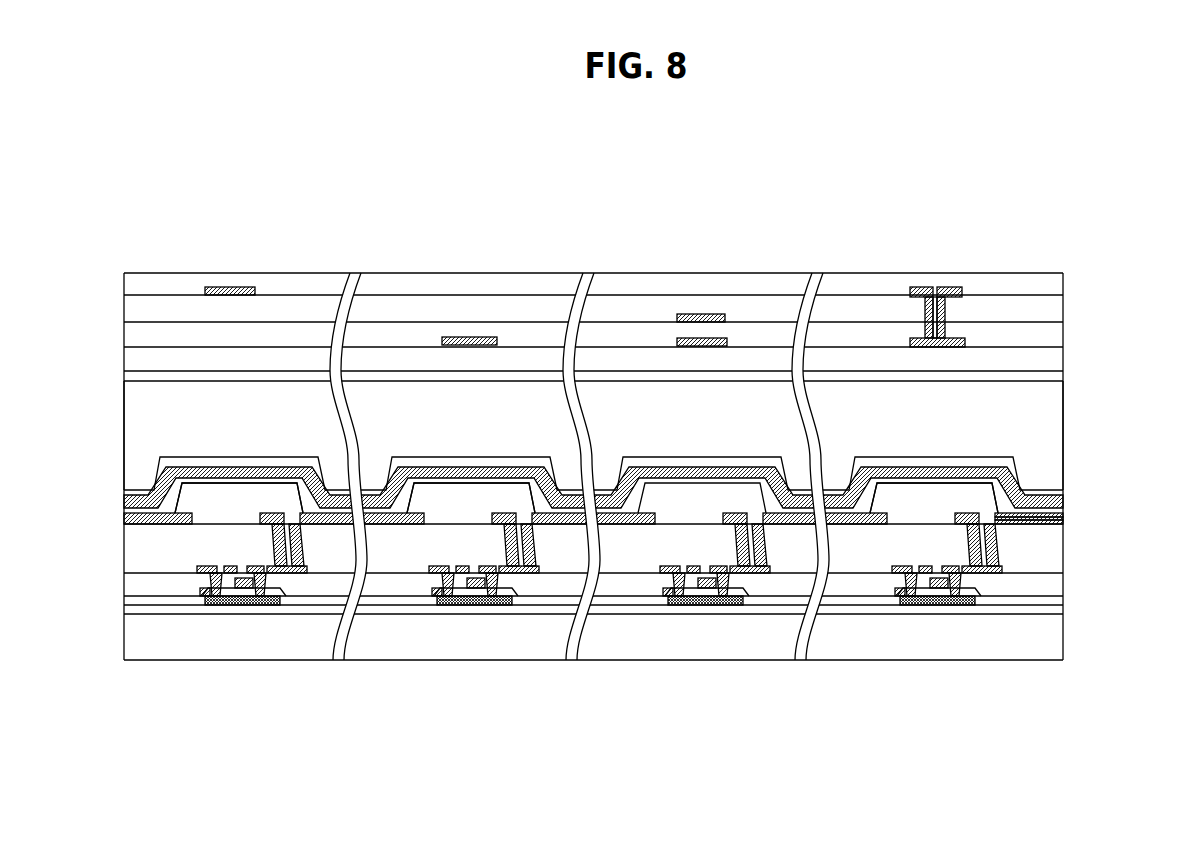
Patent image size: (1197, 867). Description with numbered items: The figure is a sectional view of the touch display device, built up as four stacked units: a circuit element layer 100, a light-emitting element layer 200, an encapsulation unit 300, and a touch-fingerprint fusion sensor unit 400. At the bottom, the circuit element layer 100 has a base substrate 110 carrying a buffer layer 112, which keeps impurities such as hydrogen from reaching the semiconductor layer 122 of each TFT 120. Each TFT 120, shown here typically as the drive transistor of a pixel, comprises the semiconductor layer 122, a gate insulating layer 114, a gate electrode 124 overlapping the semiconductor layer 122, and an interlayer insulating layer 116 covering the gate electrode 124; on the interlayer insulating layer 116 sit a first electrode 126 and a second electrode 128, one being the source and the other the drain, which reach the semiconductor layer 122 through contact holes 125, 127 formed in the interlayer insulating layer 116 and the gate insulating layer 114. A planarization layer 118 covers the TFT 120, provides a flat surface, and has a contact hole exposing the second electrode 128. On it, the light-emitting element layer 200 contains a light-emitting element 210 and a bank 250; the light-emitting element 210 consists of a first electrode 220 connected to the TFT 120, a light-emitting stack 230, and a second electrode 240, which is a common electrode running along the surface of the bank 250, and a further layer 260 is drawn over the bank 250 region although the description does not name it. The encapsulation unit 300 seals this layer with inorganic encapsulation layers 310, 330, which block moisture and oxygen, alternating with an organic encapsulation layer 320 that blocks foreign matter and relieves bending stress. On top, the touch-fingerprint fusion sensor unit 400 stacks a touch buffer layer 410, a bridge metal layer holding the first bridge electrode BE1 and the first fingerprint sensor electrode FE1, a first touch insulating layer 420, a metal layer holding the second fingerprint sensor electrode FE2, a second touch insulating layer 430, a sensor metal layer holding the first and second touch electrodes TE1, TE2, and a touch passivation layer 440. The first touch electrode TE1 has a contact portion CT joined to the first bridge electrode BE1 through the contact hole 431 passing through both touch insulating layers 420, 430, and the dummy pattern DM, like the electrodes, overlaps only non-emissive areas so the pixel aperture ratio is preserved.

The circuit element layer 100 is at (651, 622).
The base substrate 110 is at (1065, 640).
The buffer layer 112 is at (1065, 611).
The gate insulating layer 114 is at (1065, 601).
The interlayer insulating layer 116 is at (1065, 587).
The planarization layer 118 is at (621, 548).
The TFT 120 is at (666, 665).
The semiconductor layer 122 is at (690, 601).
The gate electrode 124 is at (712, 589).
The contact hole 125 is at (667, 587).
The first electrode 126 is at (672, 594).
The contact hole 127 is at (764, 643).
The second electrode 128 is at (730, 591).
The light-emitting element layer 200 is at (596, 646).
The light-emitting element 210 is at (596, 645).
The first electrode 220 is at (1018, 524).
The light-emitting stack 230 is at (1035, 520).
The second electrode 240 is at (1052, 516).
The bank 250 is at (923, 481).
The common electrode 260 is at (914, 470).
The encapsulation unit 300 is at (651, 433).
The inorganic encapsulation layer 310 is at (1065, 486).
The organic encapsulation layer 320 is at (1065, 430).
The inorganic encapsulation layer 330 is at (621, 393).
The touch-fingerprint fusion sensor unit 400 is at (587, 283).
The touch buffer layer 410 is at (1065, 359).
The first touch insulating layer 420 is at (1065, 334).
The second touch insulating layer 430 is at (1065, 308).
The touch passivation layer 440 is at (1065, 285).
The contact hole 431 is at (929, 296).
The first touch electrode TE1 is at (950, 288).
The second touch electrode TE2 is at (243, 287).
The first bridge electrode BE1 is at (916, 338).
The contact portion CT is at (941, 264).
The dummy pattern DM is at (458, 337).
The first fingerprint sensor electrode FE1 is at (716, 338).
The second fingerprint sensor electrode FE2 is at (690, 313).